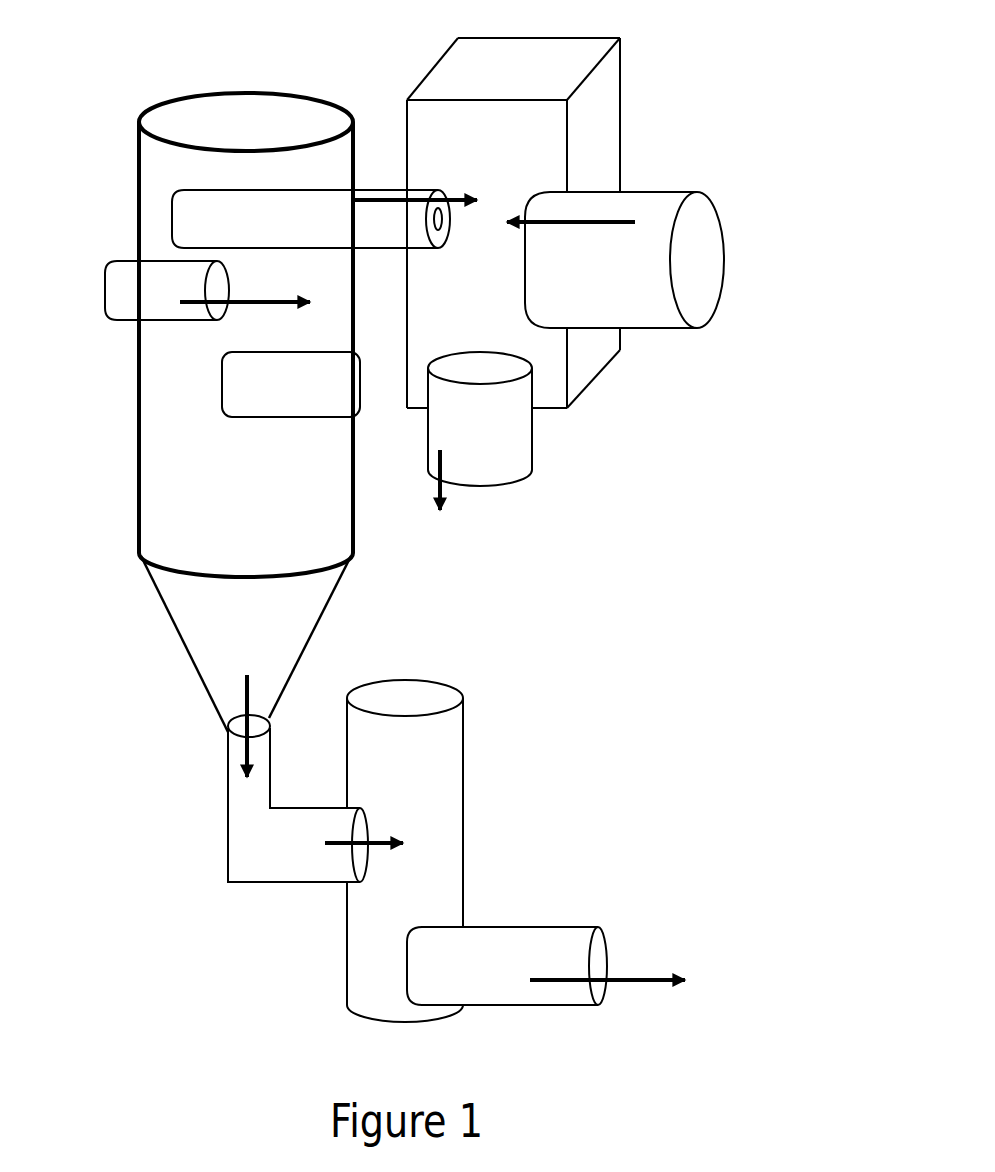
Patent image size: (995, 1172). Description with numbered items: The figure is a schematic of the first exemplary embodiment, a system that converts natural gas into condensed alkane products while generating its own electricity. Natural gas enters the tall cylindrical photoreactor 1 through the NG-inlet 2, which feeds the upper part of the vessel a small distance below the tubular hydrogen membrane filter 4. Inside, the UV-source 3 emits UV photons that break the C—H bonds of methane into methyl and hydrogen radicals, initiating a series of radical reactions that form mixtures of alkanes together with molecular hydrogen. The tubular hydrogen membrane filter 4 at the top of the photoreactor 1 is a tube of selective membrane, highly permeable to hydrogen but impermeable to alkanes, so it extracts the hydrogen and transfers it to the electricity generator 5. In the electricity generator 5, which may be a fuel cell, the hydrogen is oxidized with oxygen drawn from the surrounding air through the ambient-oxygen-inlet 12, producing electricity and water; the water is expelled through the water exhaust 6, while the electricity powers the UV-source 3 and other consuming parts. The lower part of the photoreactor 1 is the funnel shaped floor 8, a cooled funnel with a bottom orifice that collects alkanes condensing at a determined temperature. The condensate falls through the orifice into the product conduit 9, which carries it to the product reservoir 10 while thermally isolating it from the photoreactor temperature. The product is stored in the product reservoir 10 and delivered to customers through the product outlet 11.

The photoreactor 1 is at (176, 509).
The NG-inlet 2 is at (104, 282).
The UV-sources 3 is at (219, 385).
The tubular hydrogen membrane filter 4 is at (166, 220).
The electricity generator 5 is at (532, 142).
The water exhaust 6 is at (540, 421).
The funnel shaped floor 8 is at (193, 627).
The product conduit 9 is at (250, 818).
The product reservoir 10 is at (467, 780).
The product outlet 11 is at (519, 939).
The ambient-oxygen-inlet 12 is at (685, 280).